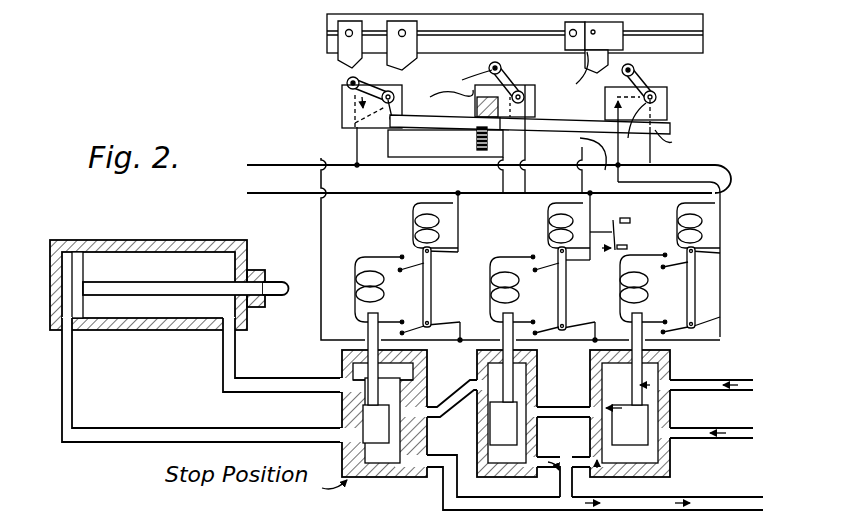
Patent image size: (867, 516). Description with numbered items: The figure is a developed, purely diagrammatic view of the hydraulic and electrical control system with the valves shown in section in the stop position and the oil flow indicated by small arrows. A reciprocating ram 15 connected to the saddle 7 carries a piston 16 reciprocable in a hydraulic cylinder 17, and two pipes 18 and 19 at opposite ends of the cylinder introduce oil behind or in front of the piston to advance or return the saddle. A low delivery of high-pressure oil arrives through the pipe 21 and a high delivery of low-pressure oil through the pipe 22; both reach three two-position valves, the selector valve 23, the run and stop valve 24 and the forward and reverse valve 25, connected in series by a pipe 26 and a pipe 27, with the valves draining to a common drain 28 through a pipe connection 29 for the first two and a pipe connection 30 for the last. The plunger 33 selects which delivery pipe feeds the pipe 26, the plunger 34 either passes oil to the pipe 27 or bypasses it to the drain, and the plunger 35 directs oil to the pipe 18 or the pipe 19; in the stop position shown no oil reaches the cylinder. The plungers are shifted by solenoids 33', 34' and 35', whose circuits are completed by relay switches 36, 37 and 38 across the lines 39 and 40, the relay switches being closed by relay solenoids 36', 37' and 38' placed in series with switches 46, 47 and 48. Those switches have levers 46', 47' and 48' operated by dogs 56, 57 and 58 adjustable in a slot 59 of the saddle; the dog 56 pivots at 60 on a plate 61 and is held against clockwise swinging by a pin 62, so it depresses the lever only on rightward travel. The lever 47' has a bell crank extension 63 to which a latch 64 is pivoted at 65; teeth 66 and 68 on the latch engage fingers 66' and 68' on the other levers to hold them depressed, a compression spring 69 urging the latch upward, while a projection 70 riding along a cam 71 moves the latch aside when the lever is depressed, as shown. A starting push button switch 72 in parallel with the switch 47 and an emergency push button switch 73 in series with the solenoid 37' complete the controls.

The saddle 7 is at (706, 20).
The plate 61 is at (580, 28).
The slot 59 is at (703, 34).
The dog 57 is at (340, 58).
The dog 58 is at (402, 45).
The pivot 60 is at (604, 36).
The dog 56 is at (596, 61).
The pin 62 is at (580, 80).
The lever 47' is at (391, 87).
The switch 47 is at (345, 106).
The bell crank extension 63 is at (357, 122).
The pivot 65 is at (392, 121).
The latch 64 is at (416, 128).
The compression spring 69 is at (476, 140).
The lever 48' is at (524, 82).
The switch 48 is at (507, 107).
The projection 70 is at (500, 110).
The cam 71 is at (447, 99).
The finger 68' is at (466, 72).
The tooth 68 is at (537, 139).
The lever 46' is at (665, 83).
The switch 46 is at (663, 134).
The finger 66' is at (643, 131).
The tooth 66 is at (690, 141).
The push button switch 72 is at (630, 181).
The line 39 is at (276, 163).
The line 40 is at (278, 195).
The relay solenoid 38' is at (413, 225).
The relay solenoid 37' is at (549, 225).
The relay solenoid 36' is at (683, 225).
The push button switch 73 is at (613, 232).
The solenoid 35' is at (385, 289).
The plunger 35 is at (347, 313).
The solenoid 34' is at (519, 289).
The plunger 34 is at (484, 313).
The solenoid 33' is at (627, 288).
The plunger 33 is at (662, 311).
The relay switch 38 is at (430, 266).
The relay switch 37 is at (566, 266).
The relay switch 36 is at (706, 290).
The hydraulic cylinder 17 is at (150, 334).
The piston 16 is at (78, 337).
The reciprocating ram 15 is at (275, 282).
The pipe 18 is at (62, 418).
The pipe 19 is at (223, 385).
The forward and reverse valve 25 is at (427, 370).
The run and stop valve 24 is at (537, 366).
The selector valve 23 is at (670, 366).
The pipe 27 is at (452, 405).
The pipe 26 is at (556, 410).
The pipe 21 is at (718, 378).
The pipe 22 is at (686, 428).
The pipe connection 29 is at (560, 490).
The pipe connection 30 is at (445, 490).
The drain 28 is at (688, 500).